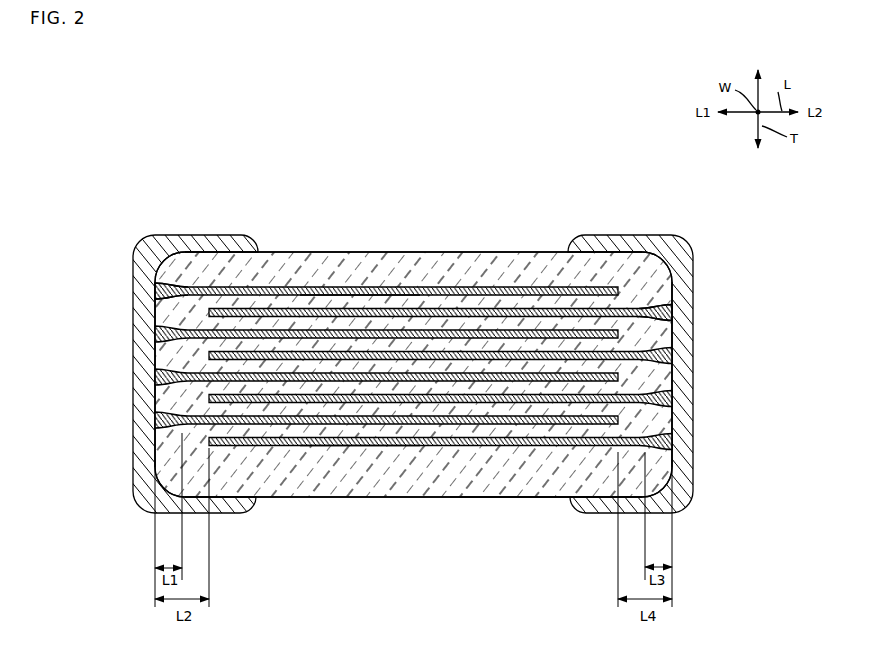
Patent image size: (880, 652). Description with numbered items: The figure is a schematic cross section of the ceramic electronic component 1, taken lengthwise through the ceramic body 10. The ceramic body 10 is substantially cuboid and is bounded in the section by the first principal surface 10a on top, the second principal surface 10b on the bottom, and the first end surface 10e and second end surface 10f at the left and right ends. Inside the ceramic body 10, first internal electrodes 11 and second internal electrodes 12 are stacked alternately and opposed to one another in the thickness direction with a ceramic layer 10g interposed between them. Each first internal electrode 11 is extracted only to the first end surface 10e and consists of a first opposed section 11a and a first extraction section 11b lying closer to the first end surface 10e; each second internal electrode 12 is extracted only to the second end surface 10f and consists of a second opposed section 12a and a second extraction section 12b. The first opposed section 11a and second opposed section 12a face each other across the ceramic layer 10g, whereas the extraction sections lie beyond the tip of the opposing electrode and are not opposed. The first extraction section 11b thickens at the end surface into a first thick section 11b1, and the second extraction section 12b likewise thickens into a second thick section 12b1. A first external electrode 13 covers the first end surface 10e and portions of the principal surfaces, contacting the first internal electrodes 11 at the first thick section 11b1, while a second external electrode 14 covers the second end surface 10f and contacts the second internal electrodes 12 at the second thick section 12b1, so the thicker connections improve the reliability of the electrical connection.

The ceramic electronic component 1 is at (656, 187).
The ceramic body 10 is at (508, 243).
The first principal surface 10a is at (397, 252).
The second principal surface 10b is at (405, 498).
The first end surface 10e is at (156, 370).
The second end surface 10f is at (686, 339).
The ceramic layer 10g is at (523, 430).
The first internal electrode 11 is at (319, 286).
The first opposed section 11a is at (365, 292).
The first extraction section 11b is at (197, 286).
The first thick section 11b1 is at (166, 281).
The second internal electrode 12 is at (296, 449).
The second opposed section 12a is at (345, 448).
The second extraction section 12b is at (630, 306).
The second thick section 12b1 is at (669, 305).
The first external electrode 13 is at (131, 303).
The second external electrode 14 is at (698, 308).